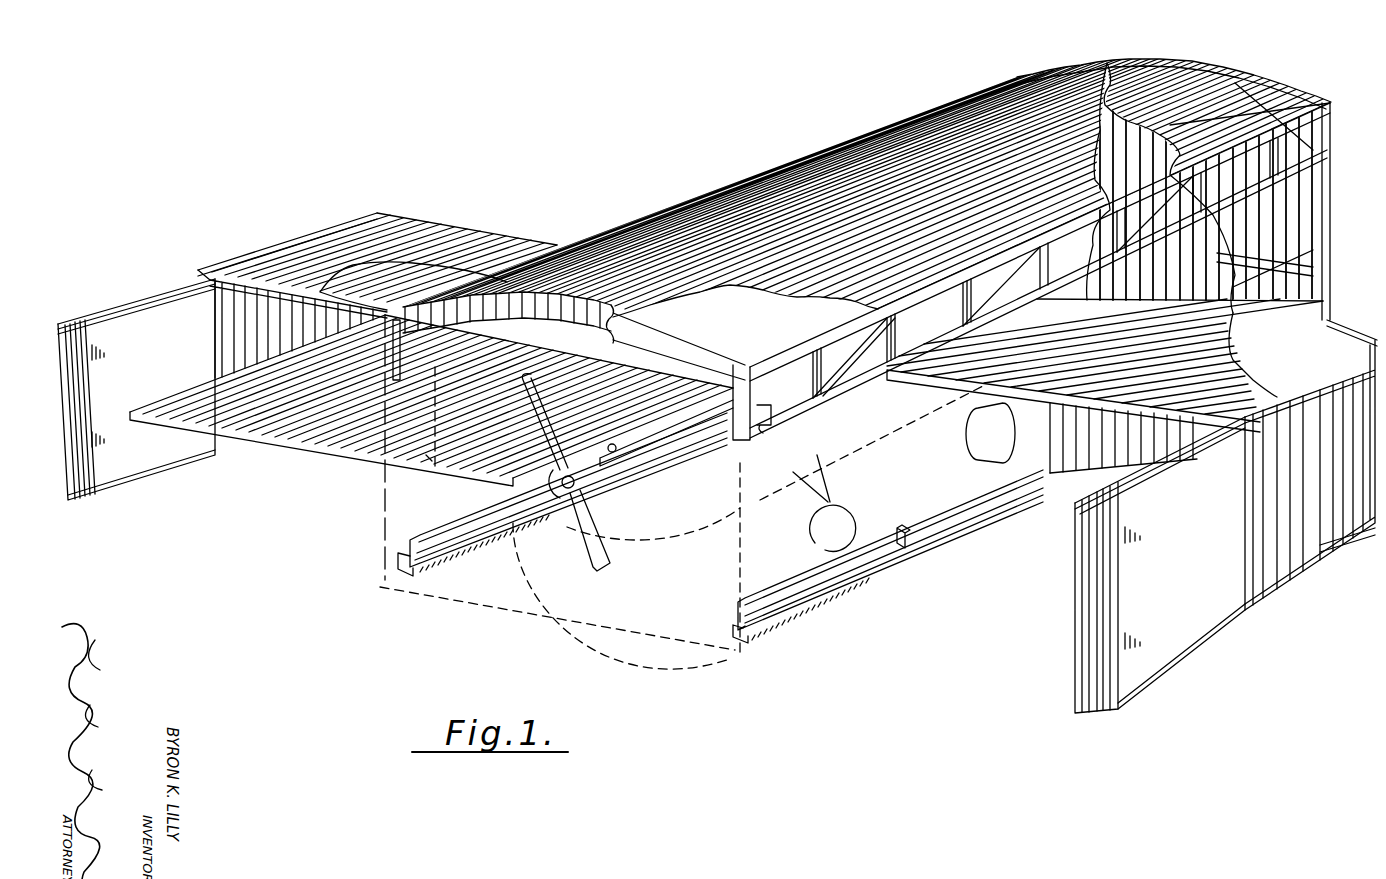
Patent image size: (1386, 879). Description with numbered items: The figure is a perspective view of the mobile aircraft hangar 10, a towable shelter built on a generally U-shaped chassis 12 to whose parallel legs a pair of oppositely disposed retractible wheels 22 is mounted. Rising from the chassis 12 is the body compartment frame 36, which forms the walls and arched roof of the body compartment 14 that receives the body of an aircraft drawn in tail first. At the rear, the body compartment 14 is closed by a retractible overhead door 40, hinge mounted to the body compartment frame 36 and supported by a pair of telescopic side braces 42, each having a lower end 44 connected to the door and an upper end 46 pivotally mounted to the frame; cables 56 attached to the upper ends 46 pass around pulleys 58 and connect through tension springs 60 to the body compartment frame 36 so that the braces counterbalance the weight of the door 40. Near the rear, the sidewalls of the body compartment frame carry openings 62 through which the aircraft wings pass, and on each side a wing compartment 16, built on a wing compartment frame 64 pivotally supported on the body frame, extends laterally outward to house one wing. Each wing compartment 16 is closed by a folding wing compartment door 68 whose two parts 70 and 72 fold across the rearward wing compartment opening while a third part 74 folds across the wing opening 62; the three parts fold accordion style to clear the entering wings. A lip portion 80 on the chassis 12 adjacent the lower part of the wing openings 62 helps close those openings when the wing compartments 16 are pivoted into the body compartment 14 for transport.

The mobile aircraft hangar 10 is at (716, 187).
The chassis 12 is at (697, 528).
The body compartment 14 is at (710, 545).
The wing compartments 16 is at (410, 218).
The retractible wheels 22 is at (955, 440).
The body compartment frame 36 is at (790, 345).
The retractible overhead door 40 is at (285, 442).
The telescopic side braces 42 is at (641, 454).
The lower end 44 is at (578, 492).
The upper end 46 is at (690, 452).
The cables 56 is at (797, 413).
The pulleys 58 is at (803, 503).
The tension springs 60 is at (868, 345).
The openings 62 is at (428, 462).
The wing compartment frame 64 is at (250, 322).
The folding wing compartment doors 68 is at (76, 506).
The door part 70 is at (651, 518).
The door part 72 is at (113, 311).
The third door part 74 is at (130, 470).
The lip portion 80 is at (420, 532).